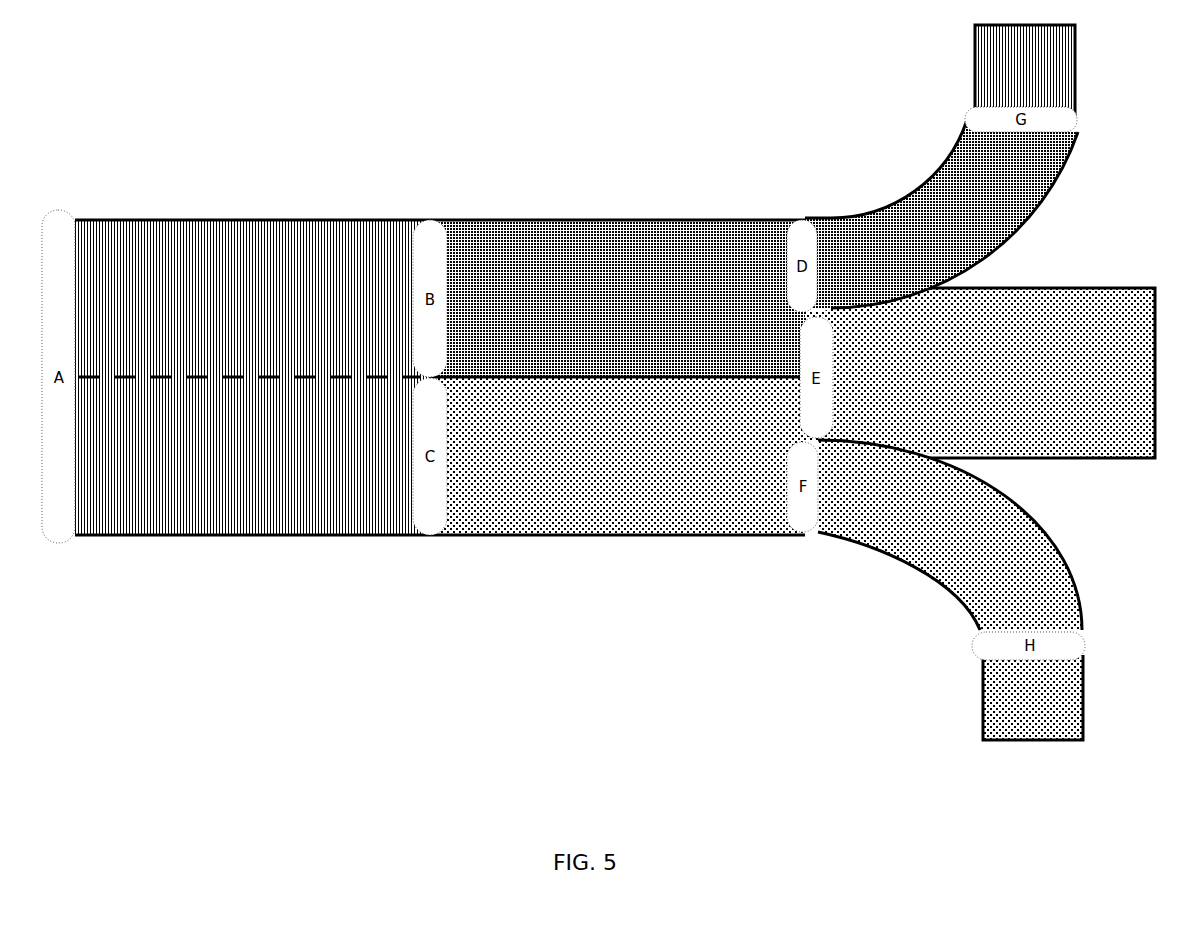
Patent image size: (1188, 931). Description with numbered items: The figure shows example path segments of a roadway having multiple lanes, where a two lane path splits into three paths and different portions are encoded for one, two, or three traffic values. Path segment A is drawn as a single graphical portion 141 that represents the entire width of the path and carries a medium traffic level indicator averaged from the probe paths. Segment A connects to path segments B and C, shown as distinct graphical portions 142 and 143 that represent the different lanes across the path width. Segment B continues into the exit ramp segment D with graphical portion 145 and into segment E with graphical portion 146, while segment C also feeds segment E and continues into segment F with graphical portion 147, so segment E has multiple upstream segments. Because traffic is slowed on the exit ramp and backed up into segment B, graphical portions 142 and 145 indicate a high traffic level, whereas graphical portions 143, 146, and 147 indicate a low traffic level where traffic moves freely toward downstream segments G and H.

The graphical portion 141 is at (230, 245).
The graphical portion 142 is at (580, 238).
The graphical portion 143 is at (566, 505).
The graphical portion 145 is at (912, 212).
The graphical portion 146 is at (1110, 305).
The graphical portion 147 is at (950, 572).